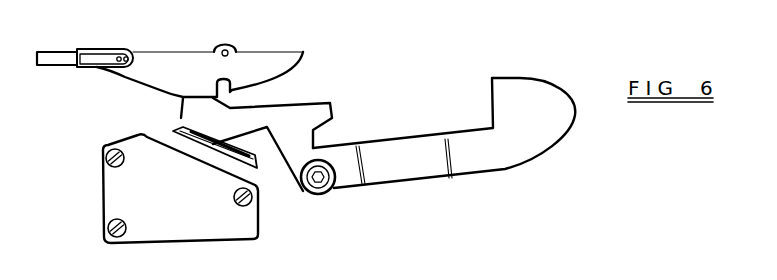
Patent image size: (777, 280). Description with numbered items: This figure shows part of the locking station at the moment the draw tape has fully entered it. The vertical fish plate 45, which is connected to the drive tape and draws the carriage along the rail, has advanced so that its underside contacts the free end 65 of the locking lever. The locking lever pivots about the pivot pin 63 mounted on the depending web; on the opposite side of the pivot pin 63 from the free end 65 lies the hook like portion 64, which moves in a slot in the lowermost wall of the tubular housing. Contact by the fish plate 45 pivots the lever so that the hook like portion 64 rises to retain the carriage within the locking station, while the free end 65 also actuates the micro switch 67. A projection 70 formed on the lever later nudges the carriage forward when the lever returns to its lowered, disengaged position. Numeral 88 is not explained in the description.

The fish plate 45 is at (184, 60).
The pivot pin 63 is at (338, 193).
The hook like portion 64 is at (558, 102).
The free end 65 is at (184, 116).
The micro switch 67 is at (174, 220).
The projection 70 is at (330, 102).
The element 88 is at (711, 279).